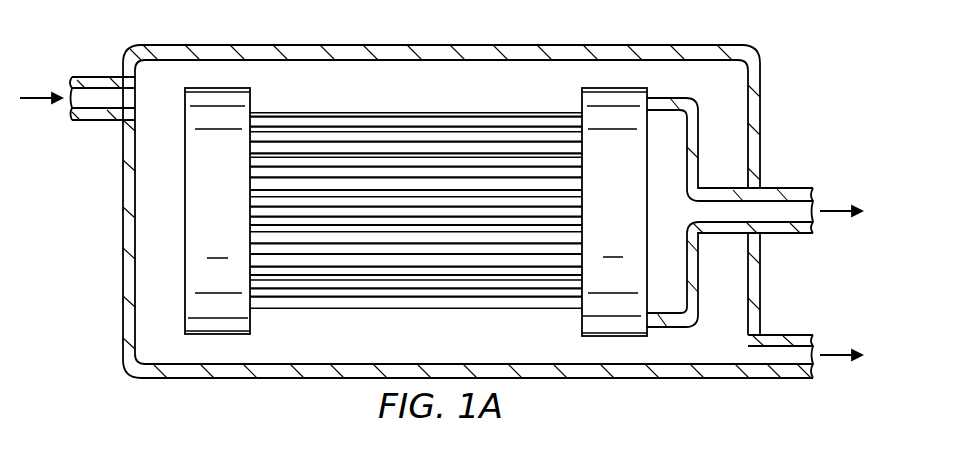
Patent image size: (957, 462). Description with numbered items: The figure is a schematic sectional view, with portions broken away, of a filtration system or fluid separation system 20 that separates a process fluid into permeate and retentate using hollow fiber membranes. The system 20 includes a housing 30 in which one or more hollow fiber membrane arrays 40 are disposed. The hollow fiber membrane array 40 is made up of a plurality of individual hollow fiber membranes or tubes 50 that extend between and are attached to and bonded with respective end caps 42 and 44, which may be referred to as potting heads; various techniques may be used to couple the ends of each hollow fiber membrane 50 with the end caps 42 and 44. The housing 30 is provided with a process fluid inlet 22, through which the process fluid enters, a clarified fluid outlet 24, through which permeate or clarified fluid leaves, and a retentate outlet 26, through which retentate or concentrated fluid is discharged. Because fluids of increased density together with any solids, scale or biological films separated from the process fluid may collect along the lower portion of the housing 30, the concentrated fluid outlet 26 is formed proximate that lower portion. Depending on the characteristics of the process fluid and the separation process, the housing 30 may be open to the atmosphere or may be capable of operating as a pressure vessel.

The filtration system 20 is at (441, 227).
The process fluid inlet 22 is at (104, 76).
The clarified fluid outlet 24 is at (791, 188).
The retentate outlet 26 is at (795, 335).
The housing 30 is at (116, 231).
The hollow fiber membrane array 40 is at (416, 250).
The end cap 42 is at (252, 100).
The end cap 44 is at (581, 100).
The hollow fiber membranes 50 is at (368, 122).